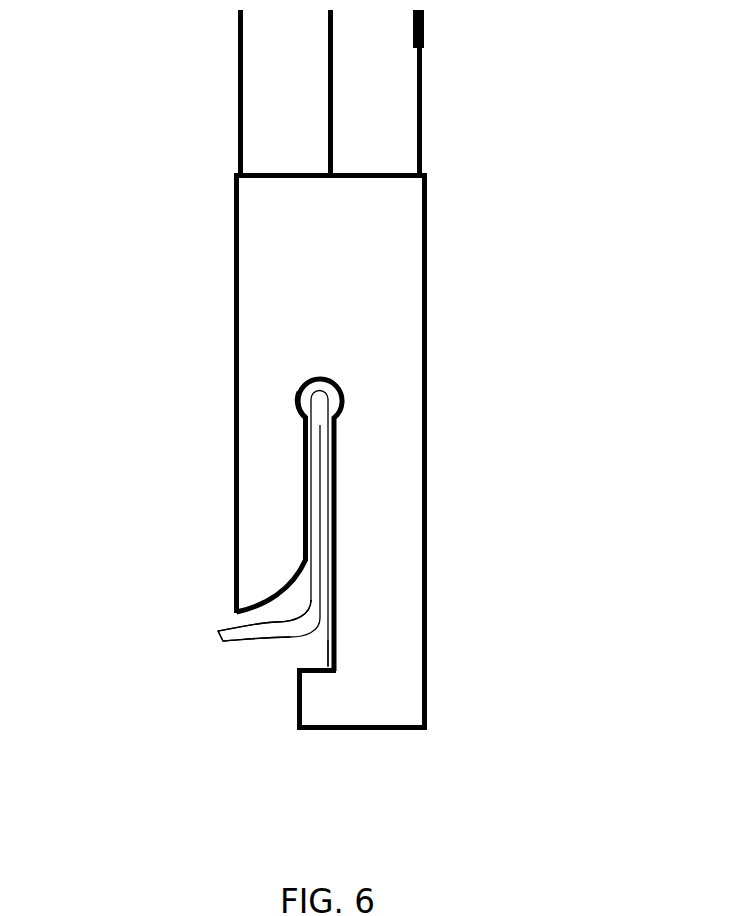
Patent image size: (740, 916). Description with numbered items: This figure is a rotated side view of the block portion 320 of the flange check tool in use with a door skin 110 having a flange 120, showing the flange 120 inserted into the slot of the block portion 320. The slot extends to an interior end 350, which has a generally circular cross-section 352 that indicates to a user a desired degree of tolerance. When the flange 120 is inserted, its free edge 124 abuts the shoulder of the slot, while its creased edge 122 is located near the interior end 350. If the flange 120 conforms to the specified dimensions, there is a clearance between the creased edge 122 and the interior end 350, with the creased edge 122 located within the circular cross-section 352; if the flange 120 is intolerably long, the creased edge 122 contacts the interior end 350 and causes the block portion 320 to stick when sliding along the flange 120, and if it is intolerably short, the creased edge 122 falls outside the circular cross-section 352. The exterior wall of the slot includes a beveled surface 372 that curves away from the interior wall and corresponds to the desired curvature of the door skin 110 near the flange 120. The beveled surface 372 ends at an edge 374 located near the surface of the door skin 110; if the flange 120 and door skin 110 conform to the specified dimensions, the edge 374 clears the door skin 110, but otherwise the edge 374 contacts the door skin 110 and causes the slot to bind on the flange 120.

The block portion 320 is at (210, 300).
The interior end 350 is at (323, 378).
The circular cross-section 352 is at (298, 405).
The creased edge 122 is at (327, 400).
The flange 120 is at (332, 523).
The free edge 124 is at (330, 667).
The edge 374 is at (237, 612).
The door skin 110 is at (236, 656).
The beveled surface 372 is at (313, 698).